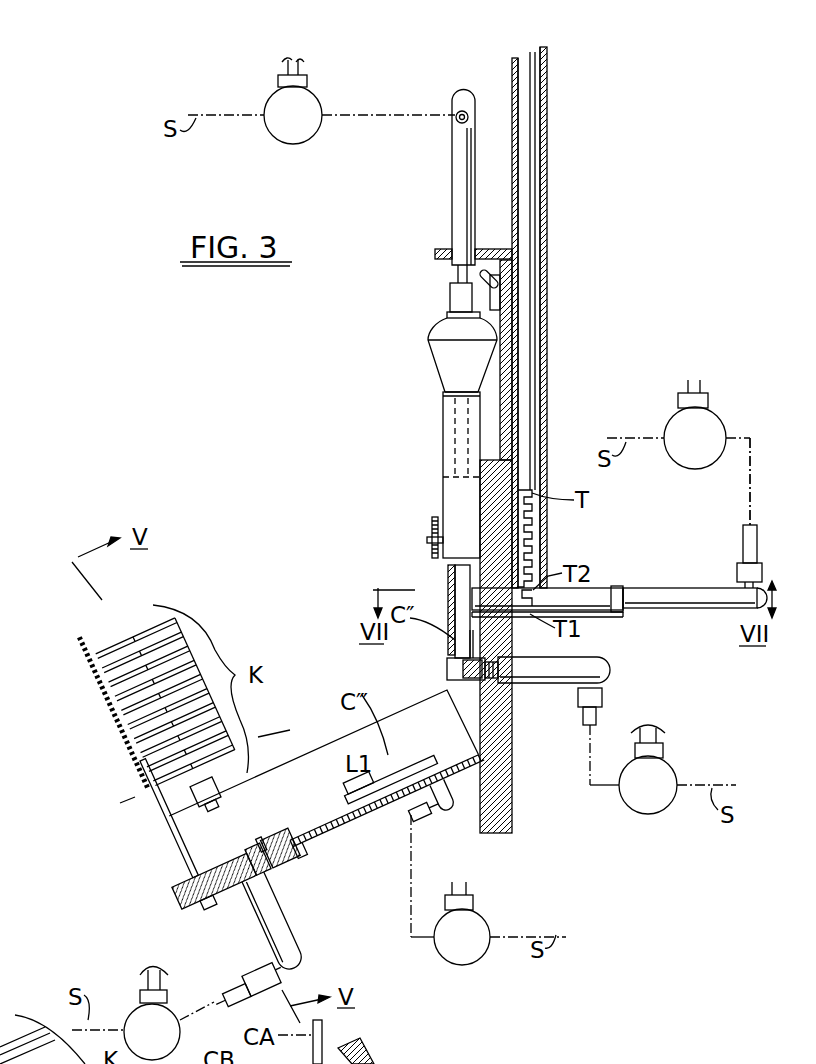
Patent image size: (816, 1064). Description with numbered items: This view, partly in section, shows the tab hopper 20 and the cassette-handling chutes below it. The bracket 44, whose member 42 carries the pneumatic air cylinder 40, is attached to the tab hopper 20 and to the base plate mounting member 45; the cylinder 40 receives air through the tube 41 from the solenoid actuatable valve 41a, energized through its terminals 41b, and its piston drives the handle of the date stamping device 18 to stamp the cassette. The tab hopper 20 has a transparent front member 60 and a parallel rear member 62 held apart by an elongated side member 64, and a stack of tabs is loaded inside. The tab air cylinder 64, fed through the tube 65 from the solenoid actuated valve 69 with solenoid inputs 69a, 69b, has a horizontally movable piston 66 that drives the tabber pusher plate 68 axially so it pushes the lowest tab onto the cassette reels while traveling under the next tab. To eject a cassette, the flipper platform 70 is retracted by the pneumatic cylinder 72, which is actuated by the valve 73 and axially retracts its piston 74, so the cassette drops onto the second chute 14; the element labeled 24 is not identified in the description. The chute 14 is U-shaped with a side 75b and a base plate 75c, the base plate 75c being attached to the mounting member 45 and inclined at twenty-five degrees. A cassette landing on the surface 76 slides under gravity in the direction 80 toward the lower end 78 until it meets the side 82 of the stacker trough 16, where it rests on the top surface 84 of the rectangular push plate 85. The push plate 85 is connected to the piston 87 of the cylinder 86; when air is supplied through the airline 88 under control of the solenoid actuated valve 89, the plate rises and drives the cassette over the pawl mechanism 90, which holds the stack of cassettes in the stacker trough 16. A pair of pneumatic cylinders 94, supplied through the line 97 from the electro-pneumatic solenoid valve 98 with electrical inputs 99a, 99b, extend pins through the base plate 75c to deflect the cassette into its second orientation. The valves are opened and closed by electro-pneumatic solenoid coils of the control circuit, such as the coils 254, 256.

The second chute 14 is at (363, 816).
The stacker chute 16 is at (70, 644).
The date stamping device 18 is at (432, 389).
The tab hopper 20 is at (550, 61).
The plate 24 is at (448, 590).
The pneumatic air cylinder 40 is at (452, 155).
The tube 41 is at (358, 114).
The solenoid actuatable valve 41a is at (300, 135).
The terminals 41b is at (293, 58).
The member 42 is at (445, 252).
The bracket 44 is at (505, 340).
The base plate mounting member 45 is at (505, 810).
The transparent front member 60 is at (512, 68).
The rear member 62 is at (550, 84).
The tab air cylinder 64 is at (525, 57).
The tube 65 is at (741, 463).
The piston 66 is at (618, 586).
The tabber pusher plate 68 is at (590, 588).
The solenoid actuated valve 69 is at (672, 462).
The solenoid input 69a is at (688, 383).
The solenoid input 69b is at (701, 383).
The flipper platform 70 is at (450, 668).
The pneumatic cylinder 72 is at (592, 655).
The valve 73 is at (657, 805).
The piston 74 is at (495, 662).
The side 75b is at (341, 788).
The base plate 75c is at (437, 730).
The surface 76 is at (440, 694).
The lower end 78 is at (208, 900).
The direction 80 is at (310, 815).
The side 82 is at (186, 863).
The top surface 84 is at (243, 862).
The rectangular push plate 85 is at (270, 876).
The cylinder 86 is at (302, 975).
The piston 87 is at (248, 860).
The airline 88 is at (245, 980).
The solenoid actuated valve 89 is at (180, 1024).
The pawl mechanism 90 is at (222, 797).
The pneumatic cylinders 94 is at (443, 808).
The line 97 is at (411, 905).
The electro-pneumatic solenoid valve 98 is at (462, 965).
The electrical input 99a is at (448, 886).
The electrical input 99b is at (468, 888).
The electro-pneumatic solenoid coil 254 is at (126, 996).
The electro-pneumatic solenoid coil 256 is at (660, 720).